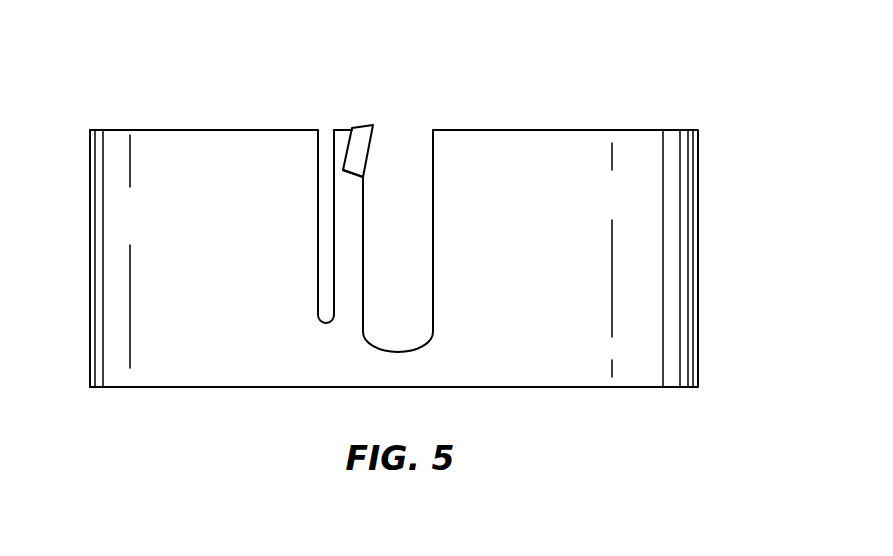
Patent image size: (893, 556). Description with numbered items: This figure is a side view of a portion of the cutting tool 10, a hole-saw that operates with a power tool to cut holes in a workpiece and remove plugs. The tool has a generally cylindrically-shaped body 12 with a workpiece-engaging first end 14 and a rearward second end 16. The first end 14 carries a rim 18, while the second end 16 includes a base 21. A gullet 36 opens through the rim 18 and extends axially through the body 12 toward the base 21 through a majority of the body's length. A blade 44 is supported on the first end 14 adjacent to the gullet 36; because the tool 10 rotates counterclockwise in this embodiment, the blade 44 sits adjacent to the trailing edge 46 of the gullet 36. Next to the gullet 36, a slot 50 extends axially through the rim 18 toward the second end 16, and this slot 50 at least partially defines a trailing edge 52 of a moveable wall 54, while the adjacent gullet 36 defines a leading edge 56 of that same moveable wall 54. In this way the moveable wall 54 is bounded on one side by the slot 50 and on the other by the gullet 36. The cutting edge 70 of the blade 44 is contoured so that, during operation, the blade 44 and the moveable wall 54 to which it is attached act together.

The cutting tool 10 is at (98, 48).
The body 12 is at (700, 270).
The first end 14 is at (198, 130).
The second end 16 is at (672, 387).
The rim 18 is at (550, 130).
The base 21 is at (125, 388).
The gullet 36 is at (433, 160).
The blade 44 is at (355, 153).
The trailing edge 46 is at (365, 337).
The slot 50 is at (327, 290).
The trailing edge 52 is at (318, 250).
The moveable wall 54 is at (349, 203).
The leading edge 56 is at (363, 200).
The cutting edge 70 is at (373, 127).